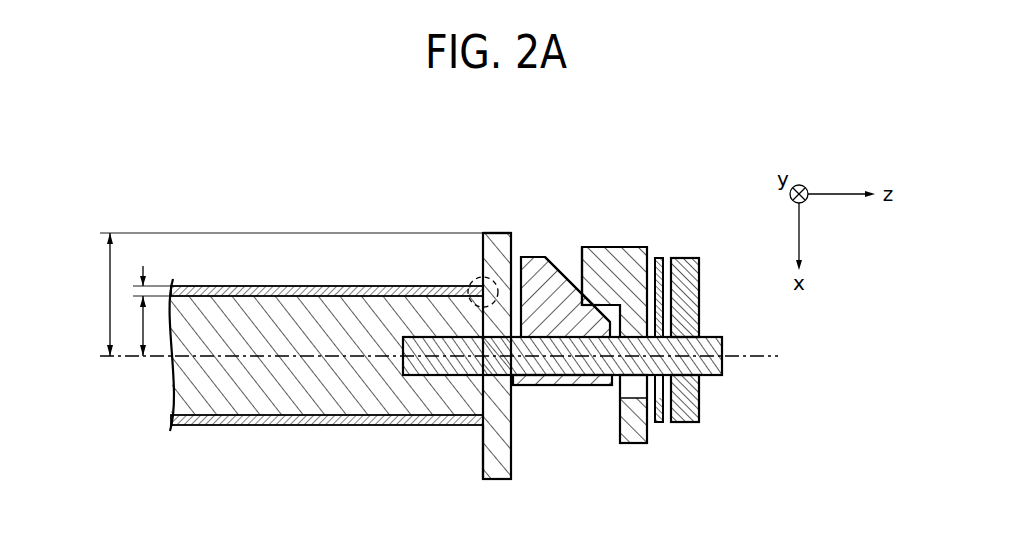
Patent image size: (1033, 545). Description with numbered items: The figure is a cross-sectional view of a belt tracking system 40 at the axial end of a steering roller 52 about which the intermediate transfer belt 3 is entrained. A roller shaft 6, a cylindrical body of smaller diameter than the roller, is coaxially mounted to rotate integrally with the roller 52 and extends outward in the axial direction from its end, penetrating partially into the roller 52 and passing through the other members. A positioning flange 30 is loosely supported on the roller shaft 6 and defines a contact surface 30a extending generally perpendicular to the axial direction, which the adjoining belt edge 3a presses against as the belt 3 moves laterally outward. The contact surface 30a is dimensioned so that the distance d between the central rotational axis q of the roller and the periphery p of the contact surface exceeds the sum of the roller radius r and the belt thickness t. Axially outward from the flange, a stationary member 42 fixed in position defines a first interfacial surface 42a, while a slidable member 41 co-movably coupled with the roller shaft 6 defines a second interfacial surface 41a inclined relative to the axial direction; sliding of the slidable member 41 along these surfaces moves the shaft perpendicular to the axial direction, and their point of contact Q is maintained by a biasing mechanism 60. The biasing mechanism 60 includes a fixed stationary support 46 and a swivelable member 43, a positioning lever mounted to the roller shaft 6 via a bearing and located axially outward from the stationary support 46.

The intermediate transfer belt 3 is at (318, 286).
The belt edge 3a is at (474, 281).
The steering roller 52 is at (225, 318).
The positioning flange 30 is at (505, 462).
The contact surface 30a is at (482, 438).
The roller shaft 6 is at (722, 343).
The belt tracking system 40 is at (624, 293).
The slidable member 41 is at (525, 257).
The second interfacial surface 41a is at (574, 304).
The stationary member 42 is at (623, 247).
The first interfacial surface 42a is at (578, 306).
The stationary support 46 is at (660, 258).
The swivelable member 43 is at (700, 310).
The biasing mechanism 60 is at (692, 445).
The periphery of the contact surface p is at (483, 233).
The central rotational axis q is at (448, 346).
The point of contact Q is at (585, 306).
The distance d is at (117, 294).
The belt thickness t is at (146, 290).
The roller radius r is at (149, 326).